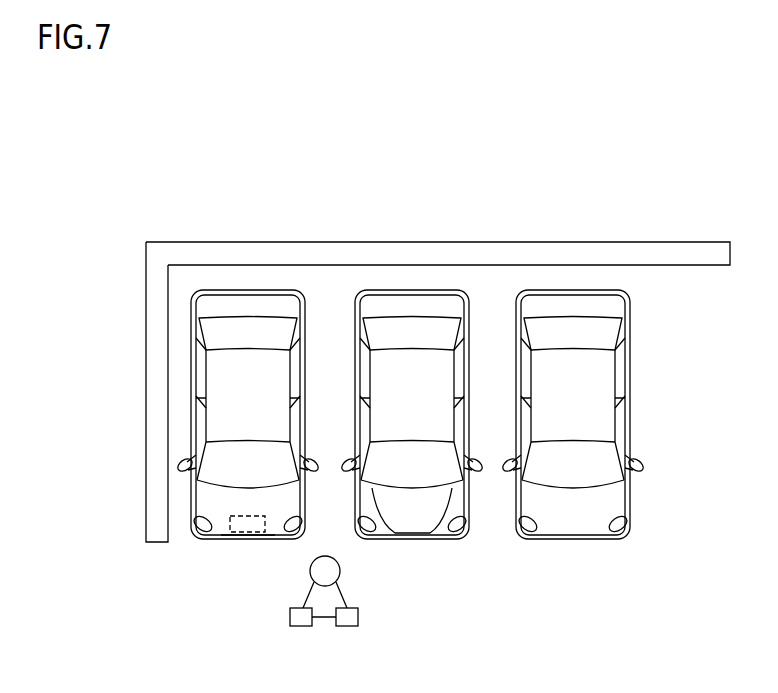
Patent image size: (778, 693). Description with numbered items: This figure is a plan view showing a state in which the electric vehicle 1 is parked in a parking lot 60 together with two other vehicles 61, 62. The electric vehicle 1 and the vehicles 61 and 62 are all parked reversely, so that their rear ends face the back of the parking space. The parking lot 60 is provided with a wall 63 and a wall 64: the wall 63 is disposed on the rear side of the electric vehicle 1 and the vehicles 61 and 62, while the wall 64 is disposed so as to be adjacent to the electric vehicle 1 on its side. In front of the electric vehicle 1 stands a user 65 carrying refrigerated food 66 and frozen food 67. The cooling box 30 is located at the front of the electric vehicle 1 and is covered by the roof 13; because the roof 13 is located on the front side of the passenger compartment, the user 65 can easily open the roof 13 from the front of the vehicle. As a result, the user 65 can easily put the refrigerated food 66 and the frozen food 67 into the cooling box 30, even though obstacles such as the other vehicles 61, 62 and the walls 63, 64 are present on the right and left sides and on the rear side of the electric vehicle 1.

The electric vehicle 1 is at (248, 391).
The roof 13 is at (255, 568).
The cooling box 30 is at (246, 559).
The parking lot 60 is at (409, 328).
The vehicle 61 is at (405, 291).
The vehicle 62 is at (572, 291).
The wall 63 is at (697, 242).
The wall 64 is at (146, 411).
The user 65 is at (341, 571).
The refrigerated food 66 is at (300, 627).
The frozen food 67 is at (346, 627).